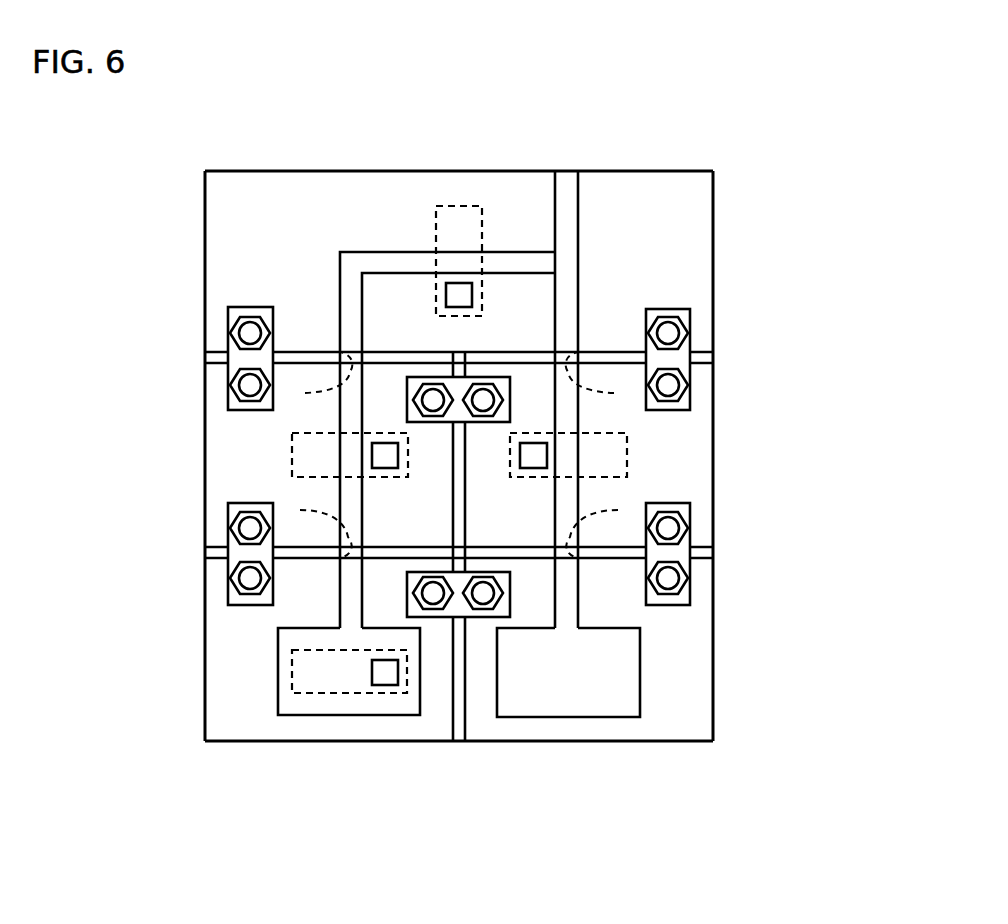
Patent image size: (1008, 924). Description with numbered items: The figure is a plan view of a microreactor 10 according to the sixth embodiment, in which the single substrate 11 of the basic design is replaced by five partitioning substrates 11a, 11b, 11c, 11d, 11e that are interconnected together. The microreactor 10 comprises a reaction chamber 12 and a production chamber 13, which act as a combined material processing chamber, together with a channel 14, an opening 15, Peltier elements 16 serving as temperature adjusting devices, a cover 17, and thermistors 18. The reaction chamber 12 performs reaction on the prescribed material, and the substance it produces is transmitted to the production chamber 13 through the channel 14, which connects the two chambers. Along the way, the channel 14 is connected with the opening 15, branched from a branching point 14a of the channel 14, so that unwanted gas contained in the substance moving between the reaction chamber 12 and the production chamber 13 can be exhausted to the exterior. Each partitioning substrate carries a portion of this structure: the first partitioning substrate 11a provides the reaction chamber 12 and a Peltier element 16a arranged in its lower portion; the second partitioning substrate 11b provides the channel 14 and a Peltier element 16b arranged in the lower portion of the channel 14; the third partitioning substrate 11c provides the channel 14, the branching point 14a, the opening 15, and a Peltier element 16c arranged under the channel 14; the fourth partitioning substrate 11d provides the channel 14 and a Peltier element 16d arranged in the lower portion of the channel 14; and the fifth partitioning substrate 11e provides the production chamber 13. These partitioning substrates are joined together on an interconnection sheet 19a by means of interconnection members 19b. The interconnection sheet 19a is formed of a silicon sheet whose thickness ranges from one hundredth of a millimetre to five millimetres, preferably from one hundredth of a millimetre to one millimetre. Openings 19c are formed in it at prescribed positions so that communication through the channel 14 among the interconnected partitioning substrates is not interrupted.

The microreactor 10 is at (818, 440).
The substrate 11 is at (738, 718).
The first partitioning substrate 11a is at (230, 741).
The second partitioning substrate 11b is at (205, 518).
The third partitioning substrate 11c is at (205, 255).
The fourth partitioning substrate 11d is at (713, 382).
The fifth partitioning substrate 11e is at (713, 628).
The reaction chamber 12 is at (350, 716).
The production chamber 13 is at (570, 718).
The channel 14 is at (388, 252).
The branching point 14a is at (573, 265).
The opening 15 is at (568, 171).
The Peltier elements 16 is at (662, 483).
The Peltier element 16a is at (292, 672).
The Peltier element 16b is at (292, 447).
The Peltier element 16c is at (460, 206).
The Peltier element 16d is at (627, 455).
The cover 17 is at (700, 681).
The thermistors 18 is at (459, 308).
The interconnection sheet 19a is at (300, 352).
The interconnection members 19b is at (250, 307).
The openings 19c is at (460, 455).